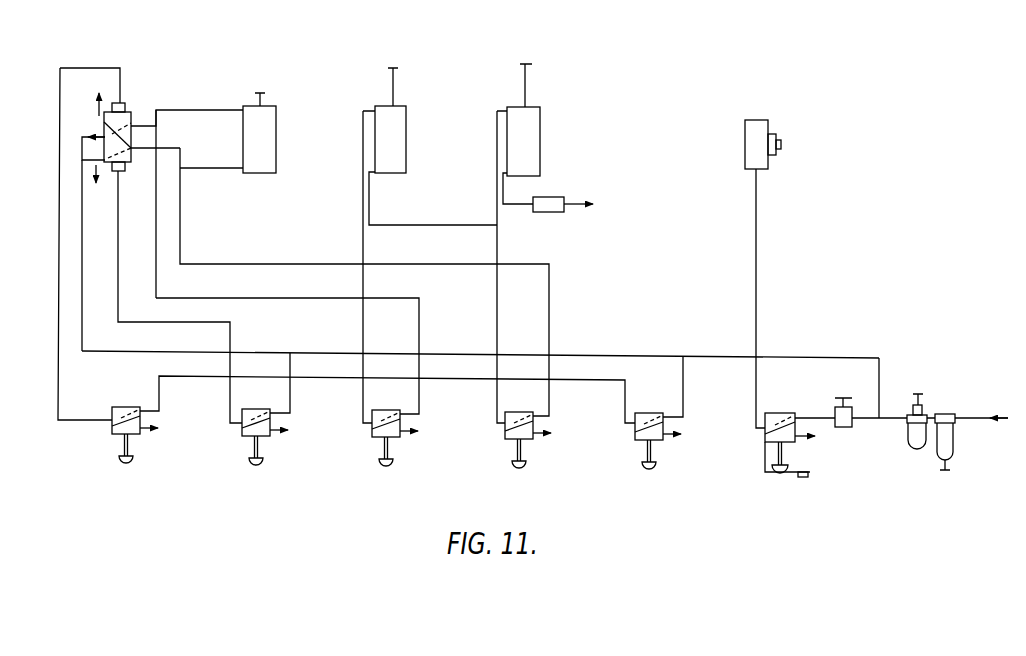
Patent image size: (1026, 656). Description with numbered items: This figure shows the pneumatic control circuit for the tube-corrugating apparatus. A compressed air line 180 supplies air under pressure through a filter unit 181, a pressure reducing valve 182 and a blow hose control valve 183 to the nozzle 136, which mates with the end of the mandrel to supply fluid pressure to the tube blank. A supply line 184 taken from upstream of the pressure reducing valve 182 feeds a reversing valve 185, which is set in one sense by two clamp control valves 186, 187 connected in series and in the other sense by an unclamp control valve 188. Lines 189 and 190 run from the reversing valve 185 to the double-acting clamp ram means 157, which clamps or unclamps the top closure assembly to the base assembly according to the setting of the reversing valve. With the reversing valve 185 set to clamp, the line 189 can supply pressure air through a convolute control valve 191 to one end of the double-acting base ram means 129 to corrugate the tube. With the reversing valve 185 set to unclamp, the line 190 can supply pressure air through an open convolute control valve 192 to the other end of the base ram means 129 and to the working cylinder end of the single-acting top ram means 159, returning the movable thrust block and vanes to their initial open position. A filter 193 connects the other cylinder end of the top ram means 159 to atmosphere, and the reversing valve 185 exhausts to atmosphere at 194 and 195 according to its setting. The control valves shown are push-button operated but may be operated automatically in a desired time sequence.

The base ram means 129 is at (398, 140).
The nozzle 136 is at (755, 140).
The clamp ram means 157 is at (267, 127).
The top ram means 159 is at (532, 135).
The compressed air line 180 is at (974, 418).
The filter unit 181 is at (933, 413).
The pressure reducing valve 182 is at (845, 428).
The blow hose control valve 183 is at (766, 432).
The supply line 184 is at (818, 356).
The reversing valve 185 is at (105, 135).
The clamp control valve 186 is at (122, 405).
The clamp control valve 187 is at (636, 434).
The unclamp control valve 188 is at (243, 428).
The line 189 is at (142, 125).
The line 190 is at (138, 150).
The convolute control valve 191 is at (373, 430).
The open convolute control valve 192 is at (506, 432).
The filter 193 is at (550, 202).
The atmosphere connection 194 is at (99, 116).
The atmosphere connection 195 is at (98, 162).